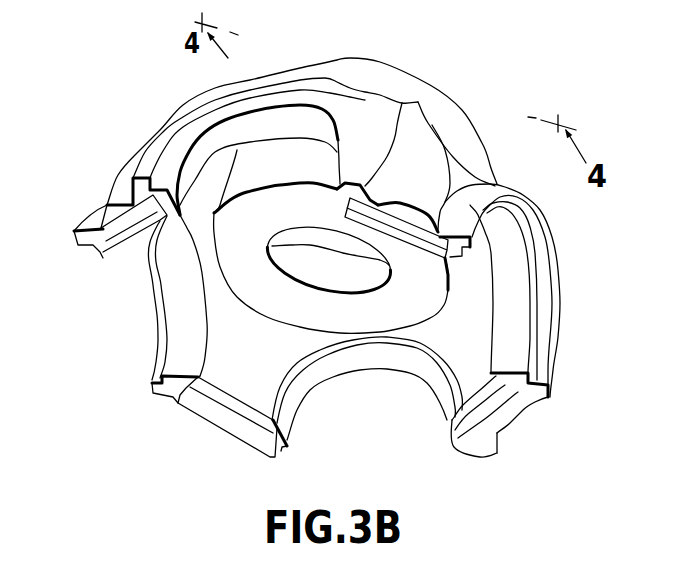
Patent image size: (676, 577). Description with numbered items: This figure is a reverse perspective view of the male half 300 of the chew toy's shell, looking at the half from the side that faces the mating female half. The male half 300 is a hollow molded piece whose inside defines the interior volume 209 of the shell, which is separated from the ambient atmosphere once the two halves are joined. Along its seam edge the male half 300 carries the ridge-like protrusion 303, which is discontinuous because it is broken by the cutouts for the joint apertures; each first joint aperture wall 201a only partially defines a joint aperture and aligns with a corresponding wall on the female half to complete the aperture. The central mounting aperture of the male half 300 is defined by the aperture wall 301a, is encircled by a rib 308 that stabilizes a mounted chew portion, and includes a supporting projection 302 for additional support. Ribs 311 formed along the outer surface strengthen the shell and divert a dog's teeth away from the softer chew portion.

The male half 300 is at (120, 82).
The supporting projection 302 is at (235, 180).
The rib 308 is at (404, 83).
The rib 311 is at (430, 143).
The protrusion 303 is at (107, 253).
The aperture wall 301a is at (310, 258).
The interior volume 209 is at (264, 366).
The first joint aperture wall 201a is at (373, 390).